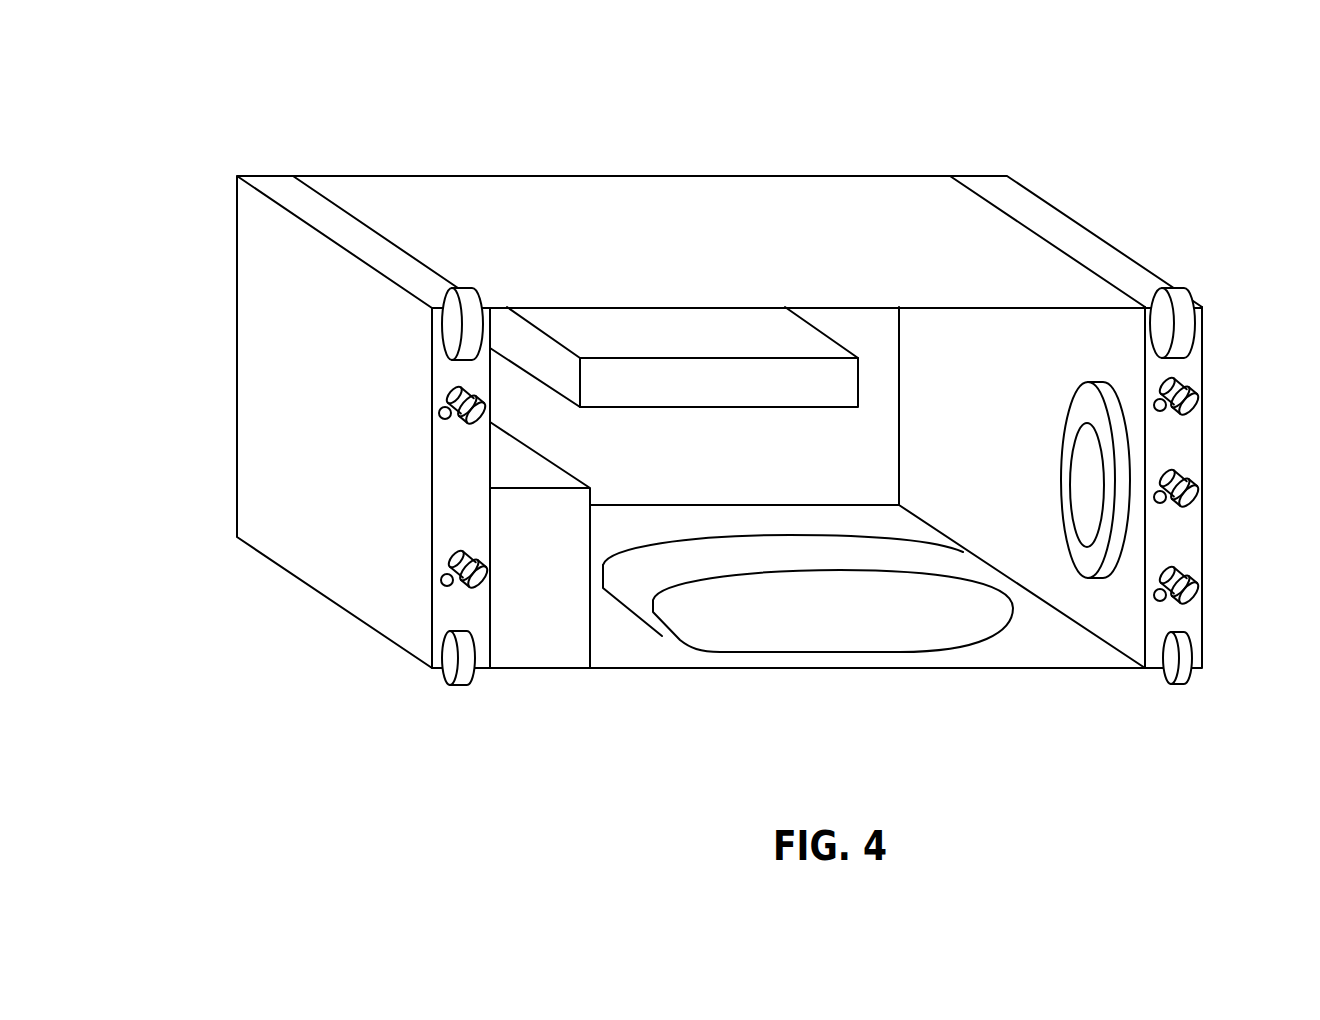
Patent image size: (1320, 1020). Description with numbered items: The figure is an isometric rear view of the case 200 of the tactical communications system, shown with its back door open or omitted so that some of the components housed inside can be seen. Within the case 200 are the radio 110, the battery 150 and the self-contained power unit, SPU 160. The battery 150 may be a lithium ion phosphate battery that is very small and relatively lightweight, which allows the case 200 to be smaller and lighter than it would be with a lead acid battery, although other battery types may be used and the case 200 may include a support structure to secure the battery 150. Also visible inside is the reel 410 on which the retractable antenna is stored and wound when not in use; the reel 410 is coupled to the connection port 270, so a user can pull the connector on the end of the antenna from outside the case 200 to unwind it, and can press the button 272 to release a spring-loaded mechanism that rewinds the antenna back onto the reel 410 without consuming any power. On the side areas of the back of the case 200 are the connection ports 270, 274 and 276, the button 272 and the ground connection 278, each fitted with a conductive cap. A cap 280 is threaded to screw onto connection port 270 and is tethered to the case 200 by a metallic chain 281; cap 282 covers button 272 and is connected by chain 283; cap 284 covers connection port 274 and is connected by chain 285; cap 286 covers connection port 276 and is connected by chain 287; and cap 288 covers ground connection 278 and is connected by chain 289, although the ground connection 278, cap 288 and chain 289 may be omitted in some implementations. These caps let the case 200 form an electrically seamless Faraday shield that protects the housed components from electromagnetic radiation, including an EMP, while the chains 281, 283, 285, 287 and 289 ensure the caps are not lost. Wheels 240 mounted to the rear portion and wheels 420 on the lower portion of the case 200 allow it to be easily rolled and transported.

The case 200 is at (392, 115).
The radio 110 is at (674, 357).
The battery 150 is at (540, 545).
The self-contained power unit 160 is at (808, 593).
The reel 410 is at (1087, 413).
The wheels 240 is at (473, 307).
The wheels 420 is at (442, 677).
The connection port 270 is at (1177, 378).
The button 272 is at (1177, 468).
The connection port 274 is at (1180, 570).
The connection port 276 is at (453, 387).
The ground connection 278 is at (450, 552).
The cap 280 is at (1190, 388).
The chain 281 is at (1188, 413).
The cap 282 is at (1193, 483).
The chain 283 is at (1190, 508).
The cap 284 is at (1193, 580).
The chain 285 is at (1190, 603).
The cap 286 is at (447, 402).
The chain 287 is at (462, 423).
The cap 288 is at (447, 567).
The chain 289 is at (460, 592).